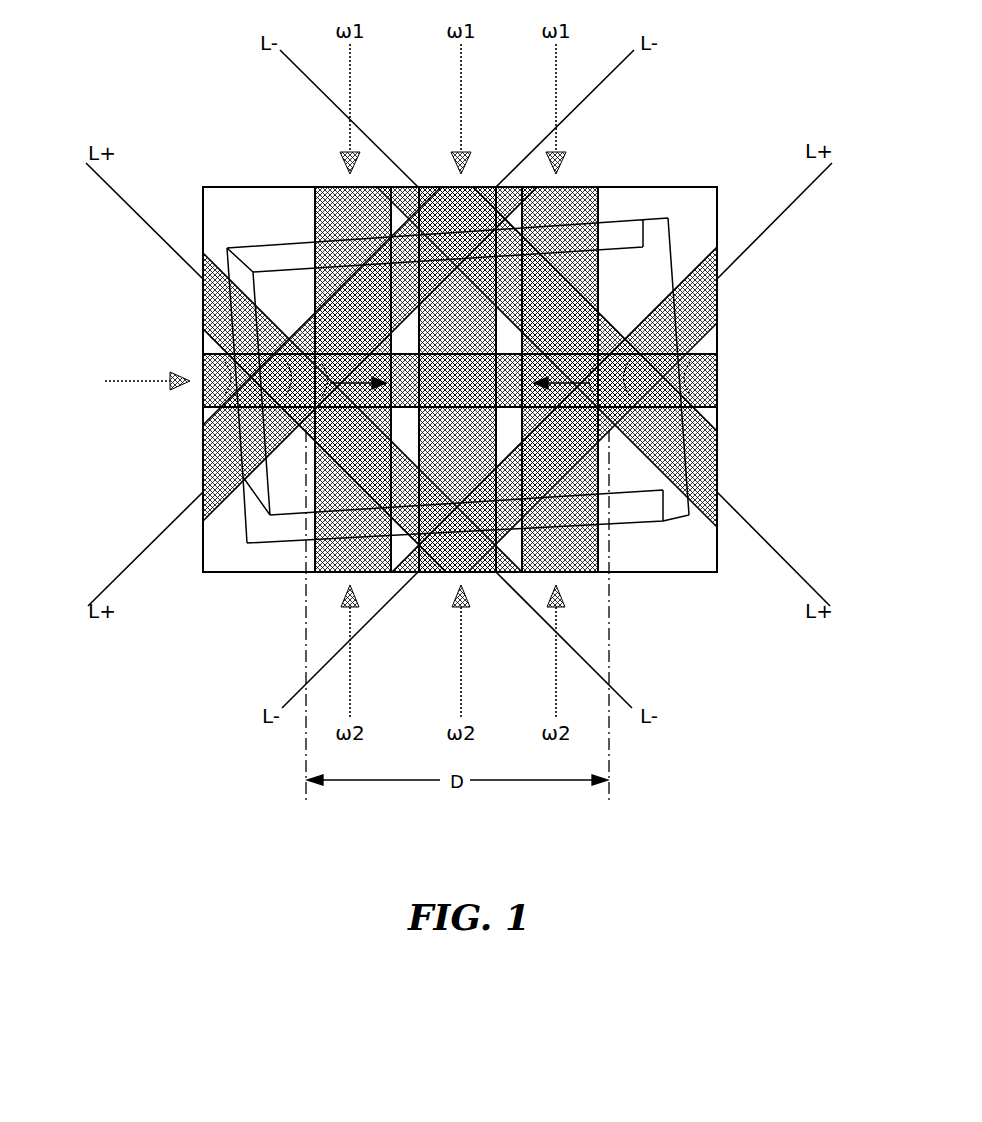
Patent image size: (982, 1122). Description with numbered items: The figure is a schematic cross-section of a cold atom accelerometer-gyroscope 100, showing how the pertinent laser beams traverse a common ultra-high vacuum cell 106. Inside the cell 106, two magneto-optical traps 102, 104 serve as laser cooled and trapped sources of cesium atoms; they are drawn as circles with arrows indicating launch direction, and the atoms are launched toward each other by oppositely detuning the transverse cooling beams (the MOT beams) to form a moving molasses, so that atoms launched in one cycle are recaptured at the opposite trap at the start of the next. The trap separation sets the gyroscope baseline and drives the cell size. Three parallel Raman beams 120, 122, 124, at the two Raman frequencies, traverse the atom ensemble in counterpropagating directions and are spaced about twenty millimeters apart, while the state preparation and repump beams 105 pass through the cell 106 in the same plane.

The cold atom accelerometer-gyroscope 100 is at (226, 136).
The magneto-optical trap 102 is at (240, 378).
The magneto-optical trap 104 is at (640, 377).
The state preparation and repump beams 105 is at (136, 380).
The vacuum cell 106 is at (623, 238).
The Raman beam 120 is at (351, 616).
The Raman beam 122 is at (460, 657).
The Raman beam 124 is at (555, 657).